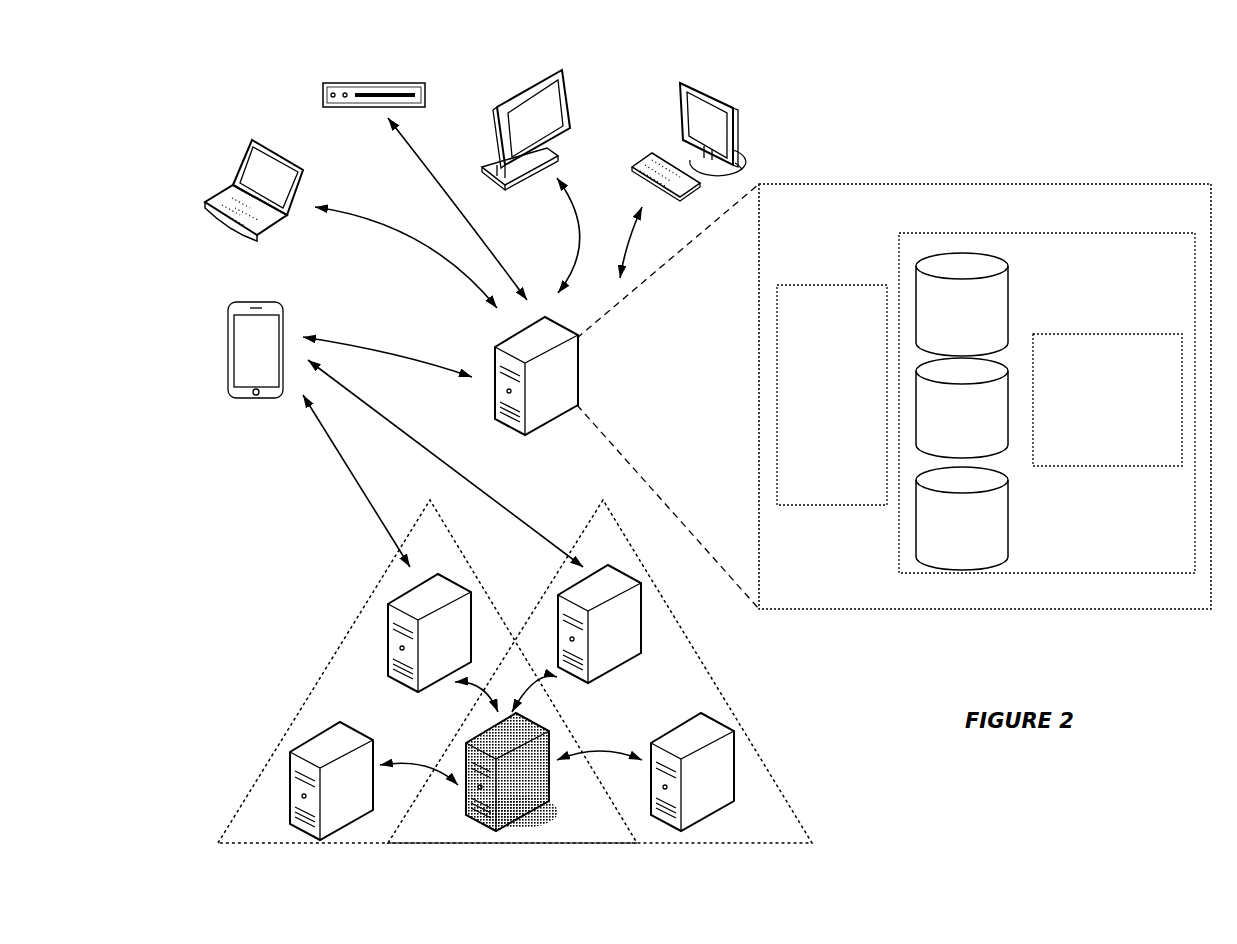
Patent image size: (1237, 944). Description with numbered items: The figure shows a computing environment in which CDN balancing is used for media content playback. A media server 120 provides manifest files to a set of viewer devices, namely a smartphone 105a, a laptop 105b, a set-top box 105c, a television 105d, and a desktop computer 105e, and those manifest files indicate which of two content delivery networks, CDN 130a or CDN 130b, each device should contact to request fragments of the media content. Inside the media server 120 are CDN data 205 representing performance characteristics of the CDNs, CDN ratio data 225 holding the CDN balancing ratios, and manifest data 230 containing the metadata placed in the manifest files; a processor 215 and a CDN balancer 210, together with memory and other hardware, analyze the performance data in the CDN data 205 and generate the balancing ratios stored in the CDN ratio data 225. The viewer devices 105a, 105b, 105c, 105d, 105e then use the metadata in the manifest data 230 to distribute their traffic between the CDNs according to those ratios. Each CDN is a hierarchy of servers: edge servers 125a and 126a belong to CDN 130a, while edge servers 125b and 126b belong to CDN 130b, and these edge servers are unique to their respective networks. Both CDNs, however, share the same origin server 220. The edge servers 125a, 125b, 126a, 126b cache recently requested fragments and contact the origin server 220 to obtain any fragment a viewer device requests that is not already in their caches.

The viewer device 105a is at (263, 300).
The viewer device 105b is at (240, 152).
The viewer device 105c is at (398, 83).
The viewer device 105d is at (540, 75).
The viewer device 105e is at (712, 90).
The media server 120 is at (578, 352).
The edge server 125a is at (452, 590).
The edge server 125b is at (625, 578).
The edge server 126a is at (355, 727).
The edge server 126b is at (719, 722).
The CDN 130a is at (330, 660).
The CDN 130b is at (700, 660).
The origin server 220 is at (536, 725).
The CDN data 205 is at (962, 304).
The CDN balancer 210 is at (1107, 400).
The processor 215 is at (832, 395).
The CDN ratio data 225 is at (962, 408).
The manifest data 230 is at (962, 518).